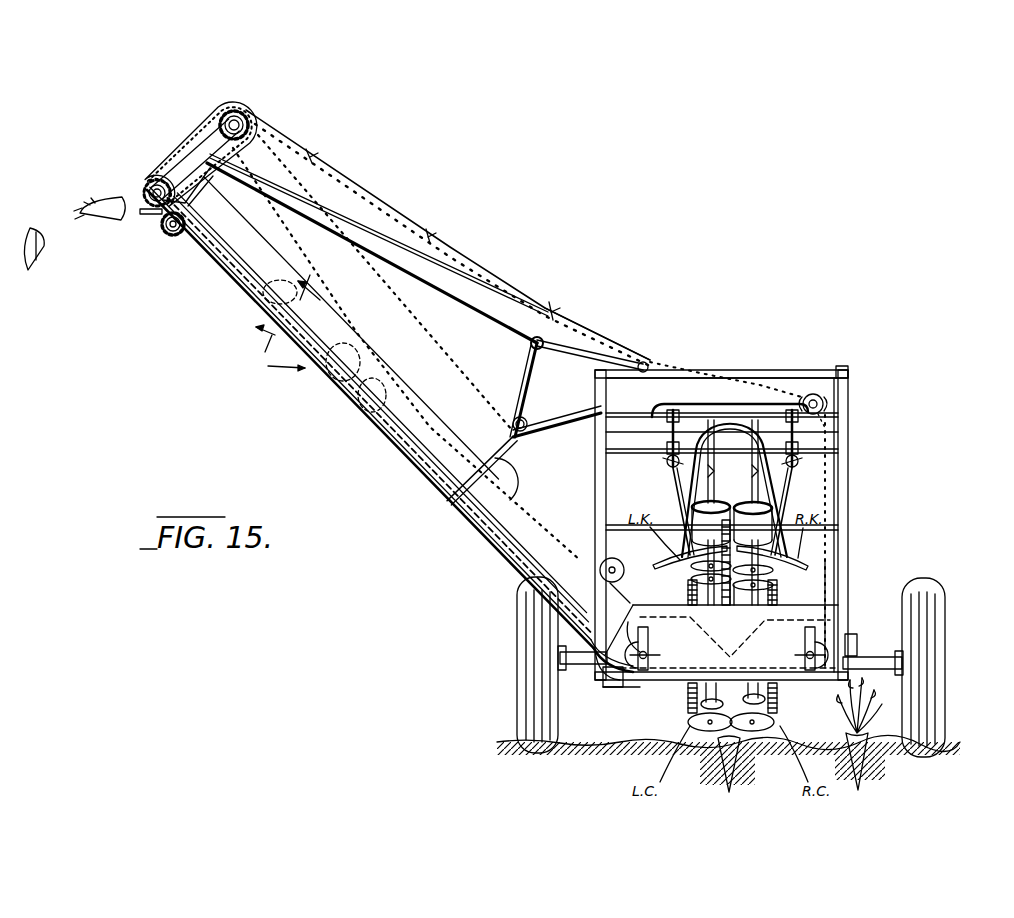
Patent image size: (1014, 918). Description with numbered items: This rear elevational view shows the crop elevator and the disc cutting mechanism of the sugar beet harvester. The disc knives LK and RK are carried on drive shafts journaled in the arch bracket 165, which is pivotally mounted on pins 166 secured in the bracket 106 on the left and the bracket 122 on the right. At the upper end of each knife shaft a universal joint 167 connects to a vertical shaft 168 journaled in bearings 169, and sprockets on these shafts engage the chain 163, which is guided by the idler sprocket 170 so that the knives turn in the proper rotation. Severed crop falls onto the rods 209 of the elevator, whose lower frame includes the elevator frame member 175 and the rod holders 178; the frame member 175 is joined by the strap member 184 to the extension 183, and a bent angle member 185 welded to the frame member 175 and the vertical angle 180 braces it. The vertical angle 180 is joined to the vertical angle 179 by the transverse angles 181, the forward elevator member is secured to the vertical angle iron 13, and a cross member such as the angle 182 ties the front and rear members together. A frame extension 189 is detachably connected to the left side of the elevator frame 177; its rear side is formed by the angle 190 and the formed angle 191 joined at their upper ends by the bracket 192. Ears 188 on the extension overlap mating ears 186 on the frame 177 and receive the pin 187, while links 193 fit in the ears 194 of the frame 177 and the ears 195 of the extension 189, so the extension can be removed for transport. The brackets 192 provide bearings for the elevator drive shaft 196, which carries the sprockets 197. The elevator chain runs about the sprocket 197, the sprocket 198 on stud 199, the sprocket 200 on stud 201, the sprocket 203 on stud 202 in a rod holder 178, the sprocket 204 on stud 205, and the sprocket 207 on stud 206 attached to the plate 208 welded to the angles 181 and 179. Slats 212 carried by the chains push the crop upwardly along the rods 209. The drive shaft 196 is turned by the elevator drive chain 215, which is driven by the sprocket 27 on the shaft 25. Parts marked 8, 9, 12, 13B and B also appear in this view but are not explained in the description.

The elevator drive shaft 196 is at (243, 118).
The drive sprocket 197 is at (258, 125).
The sprocket 198 is at (170, 172).
The stud 199 is at (146, 190).
The sprocket 200 is at (162, 228).
The stud 201 is at (172, 238).
The rod 209 is at (141, 214).
The bracket 192 is at (230, 228).
The angle 190 is at (258, 300).
The frame extension member 189 is at (268, 368).
The vertical angle iron 13 is at (321, 343).
The elevator slat 212 is at (428, 240).
The elevator drive chain 215 is at (395, 298).
The formed angle 191 is at (466, 306).
The ear 195 is at (537, 337).
The link 193 is at (606, 350).
The ear 194 is at (660, 364).
The ear 188 is at (541, 352).
The pin 187 is at (525, 422).
The ear 186 is at (528, 430).
The bent angle member 185 is at (553, 430).
The elevator frame 177 is at (470, 523).
The transverse angle 181 is at (697, 376).
The chain 163 is at (736, 410).
The bracket 106 is at (768, 390).
The bracket 122 is at (800, 385).
The sprocket 207 is at (818, 396).
The angle 182 is at (850, 370).
The plate 208 is at (826, 393).
The stud 206 is at (836, 420).
The arch bracket 165 is at (836, 452).
The vertical angle 179 is at (845, 480).
The bearing 169 is at (650, 418).
The vertical shaft 168 is at (667, 437).
The vertical angle 180 is at (598, 480).
The universal joint 167 is at (668, 482).
The pin 166 is at (735, 470).
The sprocket 27 is at (690, 560).
The shaft 25 is at (620, 576).
The chain 13B is at (830, 592).
The block B is at (852, 633).
The axle 9 is at (870, 660).
The axle 8 is at (582, 655).
The sprocket 203 is at (648, 625).
The rod holder 178 is at (650, 634).
The stud 202 is at (650, 656).
The sprocket 204 is at (802, 652).
The stud 205 is at (806, 656).
The extension 183 is at (614, 682).
The strap member 184 is at (628, 690).
The elevator frame member 175 is at (671, 688).
The idler sprocket 170 is at (806, 690).
The wheel 12 is at (518, 713).